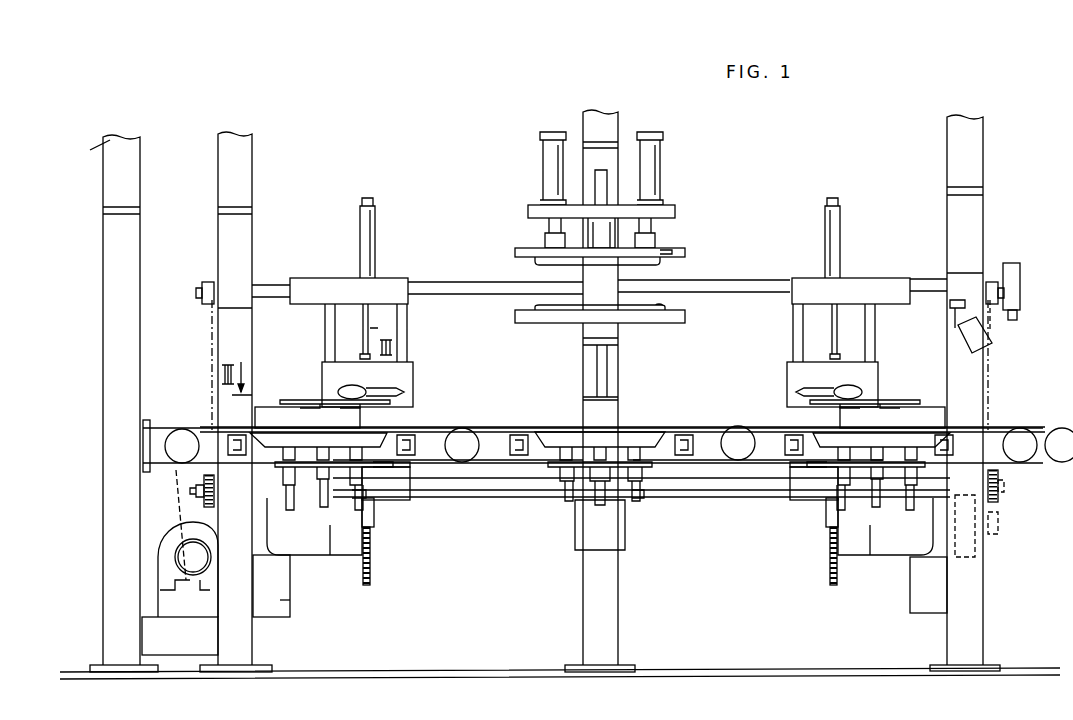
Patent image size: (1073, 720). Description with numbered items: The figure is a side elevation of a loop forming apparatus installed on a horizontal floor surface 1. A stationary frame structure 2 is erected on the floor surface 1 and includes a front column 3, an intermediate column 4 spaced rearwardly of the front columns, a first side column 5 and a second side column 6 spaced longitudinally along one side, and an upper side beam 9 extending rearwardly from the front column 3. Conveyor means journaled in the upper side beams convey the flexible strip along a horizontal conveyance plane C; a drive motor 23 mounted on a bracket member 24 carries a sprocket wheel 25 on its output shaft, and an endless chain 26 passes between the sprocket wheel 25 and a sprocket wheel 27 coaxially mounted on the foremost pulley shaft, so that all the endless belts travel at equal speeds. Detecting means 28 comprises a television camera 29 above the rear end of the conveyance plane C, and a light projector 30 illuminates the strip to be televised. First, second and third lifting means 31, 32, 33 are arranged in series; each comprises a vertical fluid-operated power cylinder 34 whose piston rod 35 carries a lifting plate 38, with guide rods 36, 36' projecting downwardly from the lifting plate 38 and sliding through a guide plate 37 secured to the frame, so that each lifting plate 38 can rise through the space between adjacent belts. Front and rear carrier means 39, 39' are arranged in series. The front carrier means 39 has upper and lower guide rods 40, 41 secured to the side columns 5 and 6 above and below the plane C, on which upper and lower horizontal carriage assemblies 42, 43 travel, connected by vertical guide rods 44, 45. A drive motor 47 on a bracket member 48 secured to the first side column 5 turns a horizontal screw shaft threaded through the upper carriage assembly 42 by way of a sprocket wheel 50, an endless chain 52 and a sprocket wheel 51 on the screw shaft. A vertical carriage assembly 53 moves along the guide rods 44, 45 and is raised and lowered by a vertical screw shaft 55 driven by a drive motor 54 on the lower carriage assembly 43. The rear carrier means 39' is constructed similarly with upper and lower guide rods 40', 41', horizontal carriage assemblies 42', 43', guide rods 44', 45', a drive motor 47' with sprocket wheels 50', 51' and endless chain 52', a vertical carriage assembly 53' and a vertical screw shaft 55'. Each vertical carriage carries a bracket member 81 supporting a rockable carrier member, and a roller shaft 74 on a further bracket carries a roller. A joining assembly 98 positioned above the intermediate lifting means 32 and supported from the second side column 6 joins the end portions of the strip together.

The horizontal floor surface 1 is at (671, 660).
The stationary frame structure 2 is at (100, 132).
The front column 3 is at (140, 182).
The intermediate column 4 is at (947, 146).
The first side column 5 is at (252, 174).
The second side column 6 is at (583, 590).
The upper side beam 9 is at (156, 424).
The drive motor 23 is at (154, 578).
The bracket member 24 is at (184, 650).
The sprocket wheel 25 is at (174, 556).
The endless chain 26 is at (174, 496).
The sprocket wheel 27 is at (186, 426).
The detecting means 28 is at (1000, 322).
The television camera 29 is at (1020, 282).
The light projector 30 is at (992, 350).
The first lifting means 31 is at (331, 540).
The second lifting means 32 is at (629, 506).
The third lifting means 33 is at (875, 540).
The fluid-operated power cylinder 34 is at (318, 512).
The piston rod 35 is at (332, 450).
The guide rod 36 is at (599, 505).
The guide rod 36' is at (514, 511).
The guide plate 37 is at (352, 462).
The lifting plate 38 is at (430, 426).
The front carrier means 39 is at (397, 224).
The rear carrier means 39' is at (808, 230).
The upper guide rod 40 is at (417, 273).
The upper guide rod 40' is at (782, 271).
The lower guide rod 41 is at (483, 495).
The lower guide rod 41' is at (791, 495).
The upper horizontal carriage assembly 42 is at (349, 276).
The upper horizontal carriage assembly 42' is at (851, 273).
The lower horizontal carriage assembly 43 is at (403, 496).
The lower horizontal carriage assembly 43' is at (803, 495).
The guide rod 44 is at (311, 333).
The guide rod 44' is at (890, 333).
The guide rod 45 is at (400, 333).
The guide rod 45' is at (794, 333).
The drive motor 47 is at (284, 586).
The drive motor 47' is at (896, 585).
The bracket member 48 is at (280, 616).
The sprocket wheel 50 is at (193, 496).
The sprocket wheel 50' is at (1002, 513).
The sprocket wheel 51 is at (198, 272).
The sprocket wheel 51' is at (1001, 266).
The endless chain 52 is at (207, 365).
The endless chain 52' is at (1015, 365).
The vertical carriage assembly 53 is at (384, 382).
The vertical carriage assembly 53' is at (811, 381).
The drive motor 54 is at (376, 524).
The vertical screw shaft 55 is at (385, 556).
The vertical screw shaft 55' is at (812, 556).
The roller shaft 74 is at (278, 408).
The bracket member 81 is at (296, 400).
The joining assembly 98 is at (684, 174).
The horizontal conveyance plane C is at (474, 428).